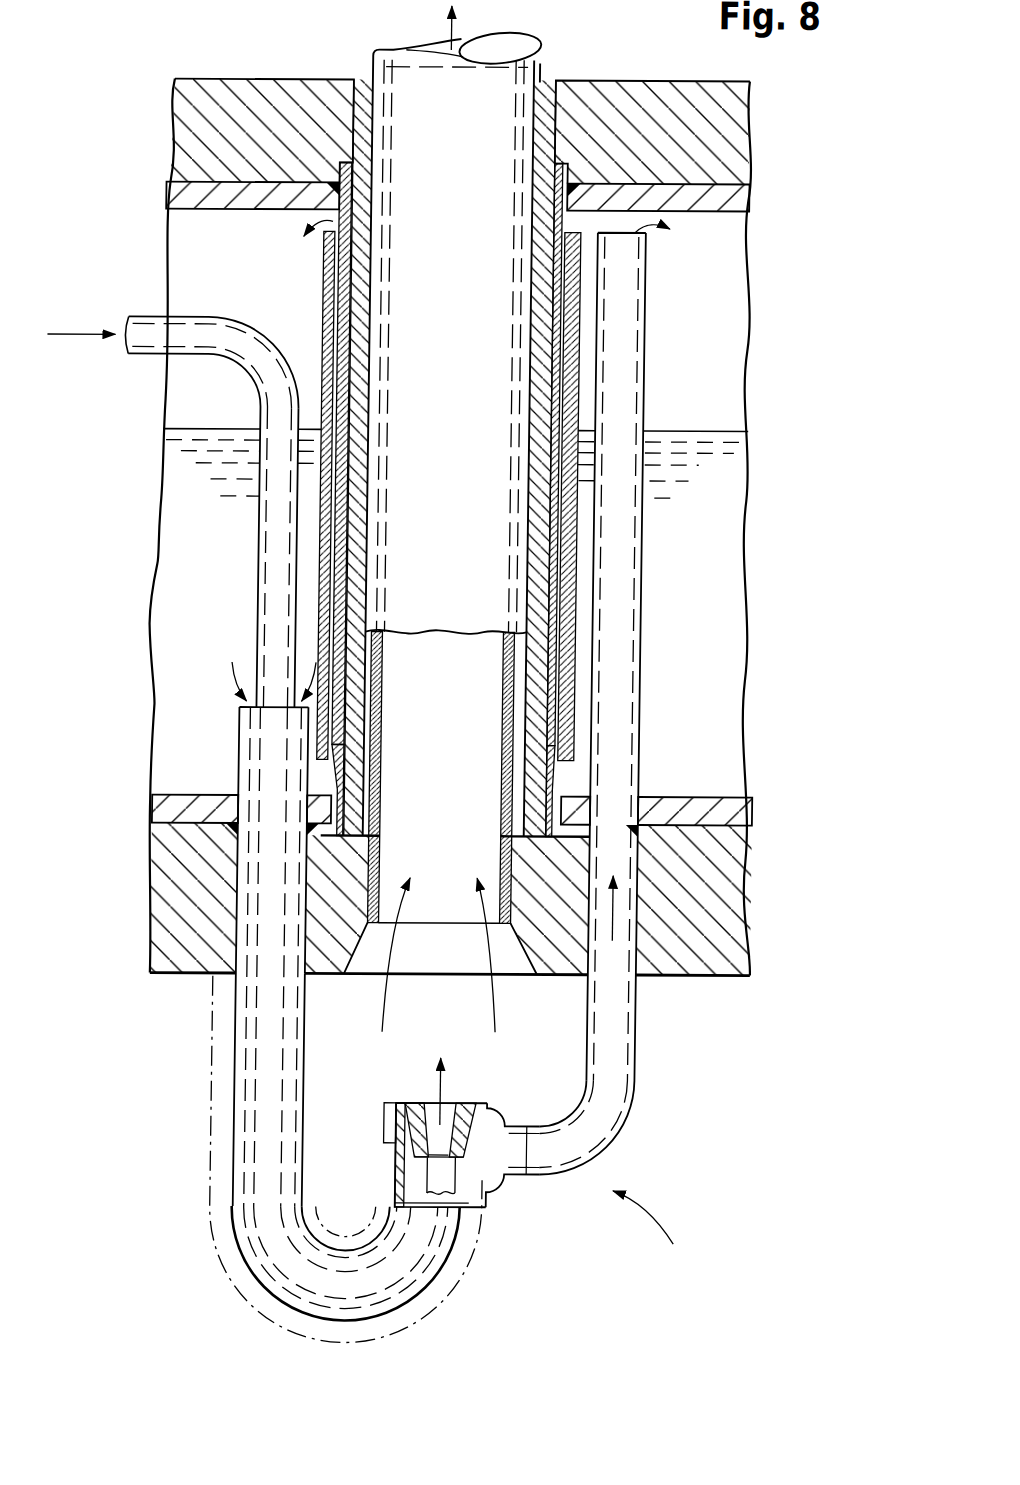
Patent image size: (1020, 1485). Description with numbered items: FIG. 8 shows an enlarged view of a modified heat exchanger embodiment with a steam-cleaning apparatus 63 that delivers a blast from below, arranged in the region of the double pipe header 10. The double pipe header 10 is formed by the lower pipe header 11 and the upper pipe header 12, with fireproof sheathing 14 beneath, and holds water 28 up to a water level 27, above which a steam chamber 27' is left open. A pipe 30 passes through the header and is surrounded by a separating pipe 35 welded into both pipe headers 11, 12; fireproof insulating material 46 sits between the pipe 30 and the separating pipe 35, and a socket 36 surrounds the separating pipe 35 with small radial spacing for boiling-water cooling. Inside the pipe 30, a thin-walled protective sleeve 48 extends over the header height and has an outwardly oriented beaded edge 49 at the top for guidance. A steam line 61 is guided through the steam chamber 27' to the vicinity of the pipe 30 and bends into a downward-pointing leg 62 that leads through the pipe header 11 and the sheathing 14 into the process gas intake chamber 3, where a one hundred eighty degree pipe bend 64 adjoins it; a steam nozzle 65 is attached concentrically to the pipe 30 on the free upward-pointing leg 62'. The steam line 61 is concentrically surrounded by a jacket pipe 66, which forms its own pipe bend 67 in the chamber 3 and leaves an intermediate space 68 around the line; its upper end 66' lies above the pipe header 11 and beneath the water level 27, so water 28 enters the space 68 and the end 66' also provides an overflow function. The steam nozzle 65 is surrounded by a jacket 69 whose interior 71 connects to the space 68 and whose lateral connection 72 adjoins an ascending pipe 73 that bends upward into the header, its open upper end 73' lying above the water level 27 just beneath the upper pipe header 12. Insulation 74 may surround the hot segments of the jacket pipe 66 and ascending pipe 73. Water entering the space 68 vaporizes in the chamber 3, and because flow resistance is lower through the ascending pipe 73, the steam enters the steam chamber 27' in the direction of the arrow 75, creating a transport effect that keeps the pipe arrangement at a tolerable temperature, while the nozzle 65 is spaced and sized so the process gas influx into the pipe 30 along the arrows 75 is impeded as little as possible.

The process gas intake chamber 3 is at (177, 1077).
The double pipe header 10 is at (800, 184).
The pipe header 11 is at (160, 809).
The upper pipe header 12 is at (168, 190).
The fireproof sheathing 14 is at (161, 920).
The water level 27 is at (456, 399).
The steam chamber 27' is at (266, 244).
The water 28 is at (715, 510).
The pipe 30 is at (542, 60).
The separating pipe 35 is at (341, 283).
The socket 36 is at (326, 317).
The fireproof insulating material 46 is at (362, 297).
The protective sleeve 48 is at (511, 753).
The beaded edge 49 is at (394, 47).
The steam line 61 is at (192, 343).
The downward-pointing leg 62 is at (323, 858).
The upward-pointing leg 62' is at (512, 1237).
The steam-cleaning apparatus 63 is at (659, 1230).
The pipe bend 64 is at (305, 1280).
The steam nozzle 65 is at (425, 1103).
The jacket pipe 66 is at (272, 1112).
The end of the jacket pipe 66' is at (243, 683).
The pipe bend 67 is at (457, 1289).
The intermediate space 68 is at (256, 762).
The jacket 69 is at (409, 1131).
The interior 71 is at (428, 1172).
The lateral connection 72 is at (514, 1124).
The ascending pipe 73 is at (623, 704).
The upper end of the ascending pipe 73' is at (682, 249).
The insulation 74 is at (224, 1117).
The arrow 75 is at (499, 1004).